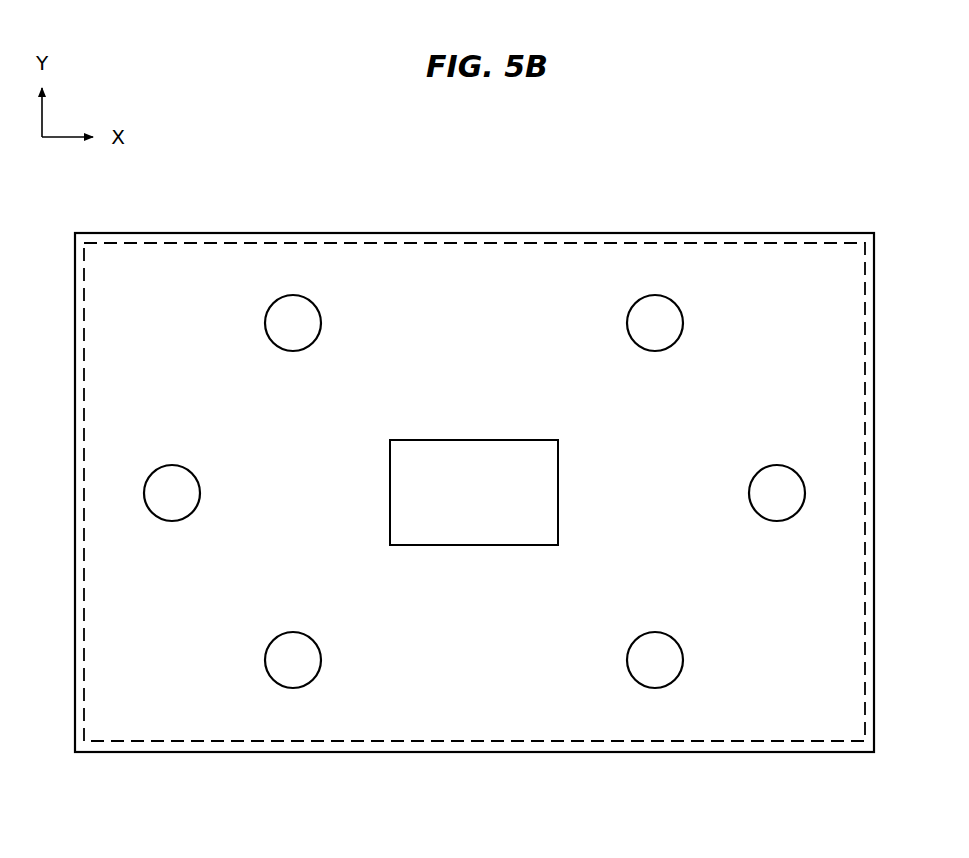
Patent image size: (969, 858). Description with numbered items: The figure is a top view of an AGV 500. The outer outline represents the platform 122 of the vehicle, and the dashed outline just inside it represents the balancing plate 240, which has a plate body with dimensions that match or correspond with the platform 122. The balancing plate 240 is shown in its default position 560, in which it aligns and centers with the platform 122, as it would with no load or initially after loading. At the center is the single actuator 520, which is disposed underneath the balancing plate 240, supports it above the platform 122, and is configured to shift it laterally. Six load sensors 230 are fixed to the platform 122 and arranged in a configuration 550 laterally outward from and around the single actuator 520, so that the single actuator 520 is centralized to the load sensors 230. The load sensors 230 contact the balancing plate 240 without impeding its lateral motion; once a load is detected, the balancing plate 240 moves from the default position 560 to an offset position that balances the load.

The AGV 500 is at (303, 165).
The platform 122 is at (645, 233).
The balancing plate 240 is at (725, 243).
The default position 560 is at (590, 238).
The configuration 550 is at (190, 344).
The single actuator 520 is at (457, 503).
The load sensors 230 is at (275, 334).